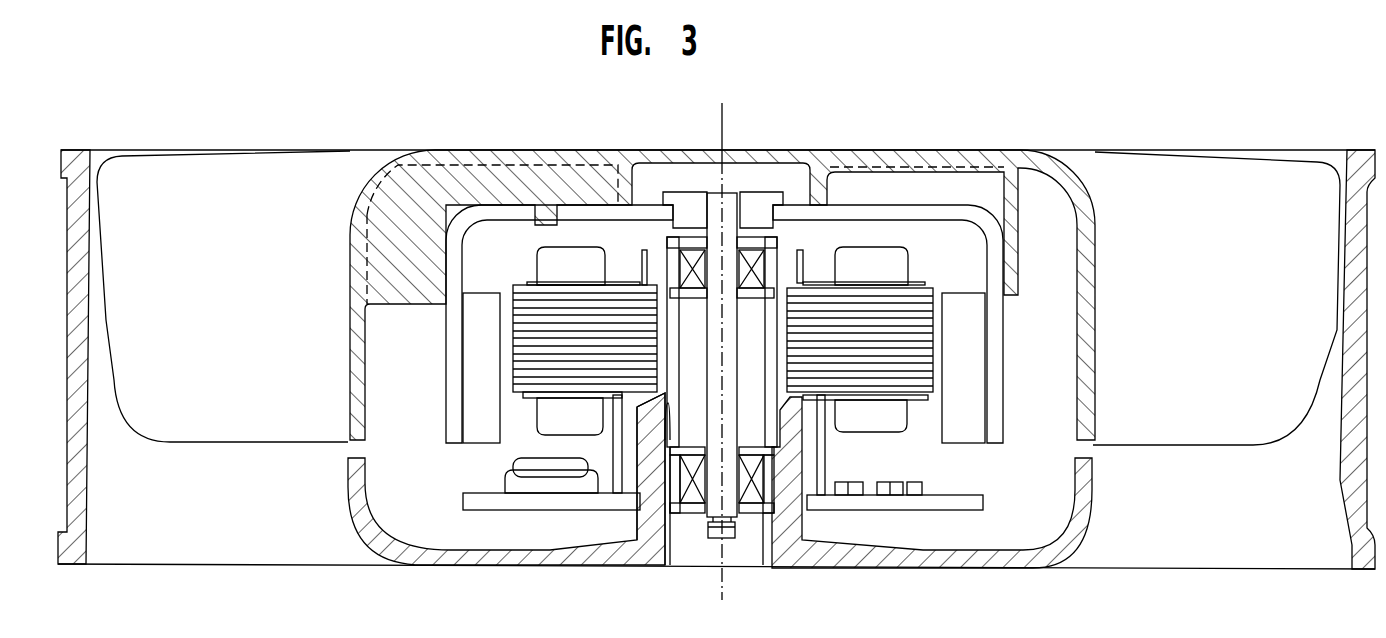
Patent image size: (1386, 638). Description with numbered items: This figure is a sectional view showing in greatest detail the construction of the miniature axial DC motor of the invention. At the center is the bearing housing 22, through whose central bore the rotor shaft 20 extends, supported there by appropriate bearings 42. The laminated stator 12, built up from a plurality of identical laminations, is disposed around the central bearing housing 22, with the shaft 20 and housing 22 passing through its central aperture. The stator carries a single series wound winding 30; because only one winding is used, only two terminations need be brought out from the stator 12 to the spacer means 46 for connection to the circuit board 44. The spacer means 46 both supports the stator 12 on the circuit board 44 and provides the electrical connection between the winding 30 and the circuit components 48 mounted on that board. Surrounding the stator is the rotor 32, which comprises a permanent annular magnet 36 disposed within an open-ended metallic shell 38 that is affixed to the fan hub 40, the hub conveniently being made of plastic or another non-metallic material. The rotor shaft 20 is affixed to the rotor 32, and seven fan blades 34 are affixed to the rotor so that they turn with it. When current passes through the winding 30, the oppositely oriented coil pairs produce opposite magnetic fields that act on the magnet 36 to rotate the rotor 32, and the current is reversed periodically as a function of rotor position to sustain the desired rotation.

The laminated stator 12 is at (535, 307).
The rotor shaft 20 is at (735, 380).
The bearing housing 22 is at (662, 390).
The winding 30 is at (588, 263).
The rotor 32 is at (348, 485).
The fan blades 34 is at (238, 428).
The permanent annular magnet 36 is at (475, 437).
The open-ended metallic shell 38 is at (82, 172).
The fan hub 40 is at (628, 172).
The bearings 42 is at (752, 253).
The circuit board 44 is at (500, 505).
The spacer means 46 is at (810, 447).
The circuit components 48 is at (525, 467).